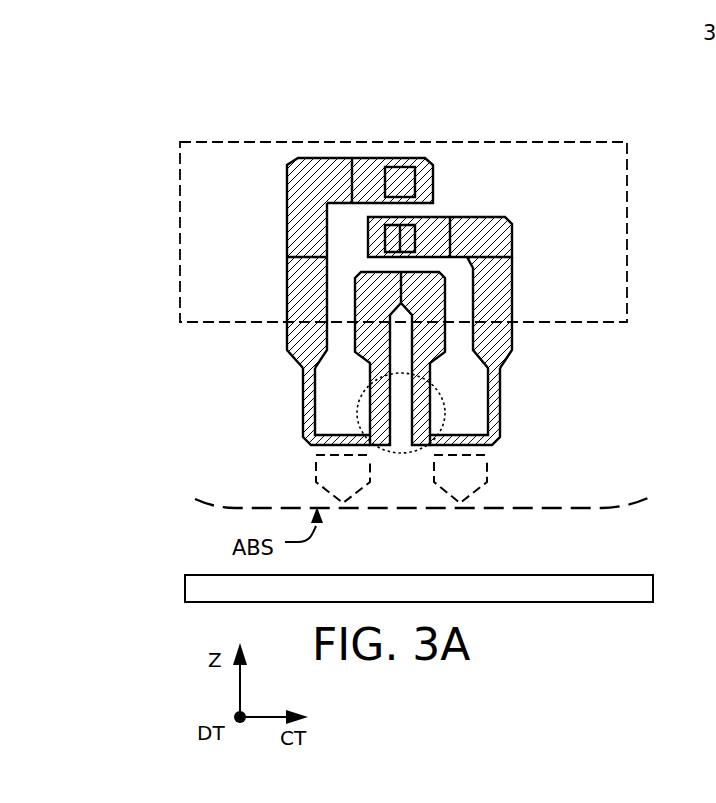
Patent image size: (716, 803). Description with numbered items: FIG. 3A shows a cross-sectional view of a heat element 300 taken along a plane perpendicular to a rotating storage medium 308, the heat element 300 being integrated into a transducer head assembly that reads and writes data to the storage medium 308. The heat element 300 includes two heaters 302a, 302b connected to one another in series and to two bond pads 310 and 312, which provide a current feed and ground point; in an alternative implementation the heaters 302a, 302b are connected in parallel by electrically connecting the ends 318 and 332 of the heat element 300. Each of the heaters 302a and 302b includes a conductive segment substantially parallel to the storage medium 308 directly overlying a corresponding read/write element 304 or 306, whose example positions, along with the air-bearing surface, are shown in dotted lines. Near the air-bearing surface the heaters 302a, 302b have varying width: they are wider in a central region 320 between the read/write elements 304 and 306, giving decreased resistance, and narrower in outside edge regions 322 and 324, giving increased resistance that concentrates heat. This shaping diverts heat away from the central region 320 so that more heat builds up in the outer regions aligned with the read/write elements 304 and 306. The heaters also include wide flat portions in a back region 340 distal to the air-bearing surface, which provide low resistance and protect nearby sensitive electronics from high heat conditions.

The heat element 300 is at (194, 68).
The heater 302a is at (307, 315).
The heater 302b is at (503, 313).
The read/write element 304 is at (352, 473).
The read/write element 306 is at (465, 475).
The storage medium 308 is at (247, 587).
The bond pad 310 is at (400, 197).
The bond pad 312 is at (413, 228).
The end of the heat element 318 is at (368, 238).
The central region 320 is at (342, 395).
The outside edge region 322 is at (285, 412).
The outside edge region 324 is at (514, 397).
The end of the heat element 332 is at (433, 182).
The back region 340 is at (627, 198).